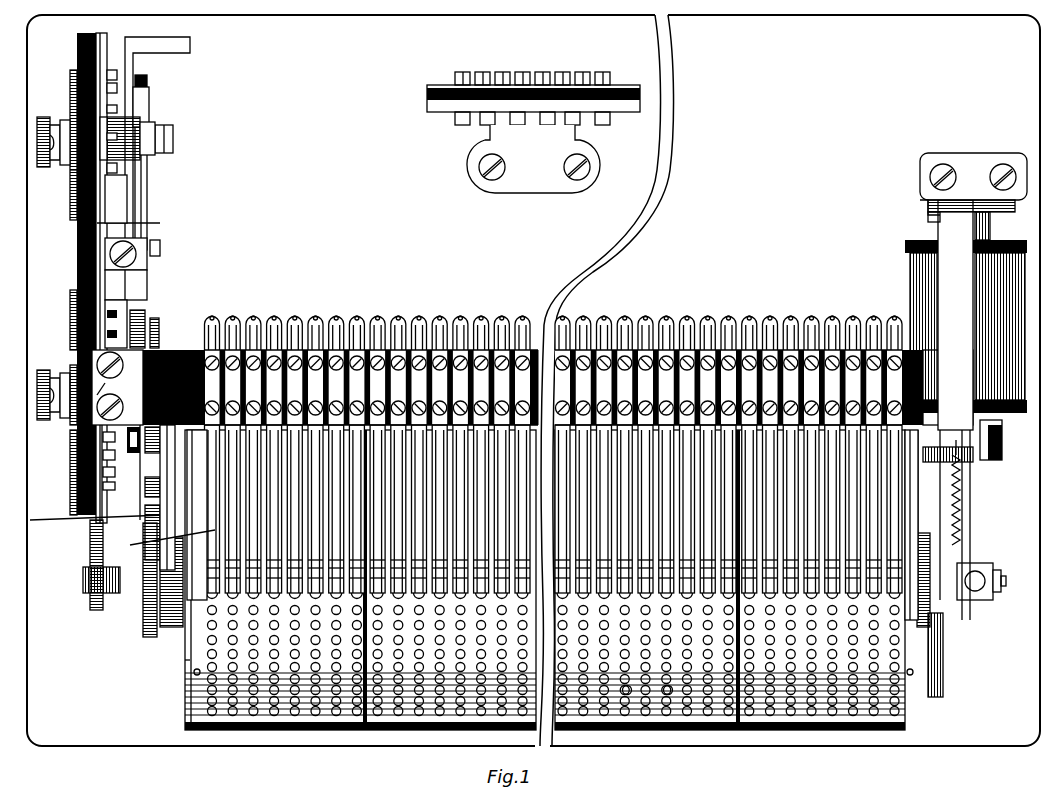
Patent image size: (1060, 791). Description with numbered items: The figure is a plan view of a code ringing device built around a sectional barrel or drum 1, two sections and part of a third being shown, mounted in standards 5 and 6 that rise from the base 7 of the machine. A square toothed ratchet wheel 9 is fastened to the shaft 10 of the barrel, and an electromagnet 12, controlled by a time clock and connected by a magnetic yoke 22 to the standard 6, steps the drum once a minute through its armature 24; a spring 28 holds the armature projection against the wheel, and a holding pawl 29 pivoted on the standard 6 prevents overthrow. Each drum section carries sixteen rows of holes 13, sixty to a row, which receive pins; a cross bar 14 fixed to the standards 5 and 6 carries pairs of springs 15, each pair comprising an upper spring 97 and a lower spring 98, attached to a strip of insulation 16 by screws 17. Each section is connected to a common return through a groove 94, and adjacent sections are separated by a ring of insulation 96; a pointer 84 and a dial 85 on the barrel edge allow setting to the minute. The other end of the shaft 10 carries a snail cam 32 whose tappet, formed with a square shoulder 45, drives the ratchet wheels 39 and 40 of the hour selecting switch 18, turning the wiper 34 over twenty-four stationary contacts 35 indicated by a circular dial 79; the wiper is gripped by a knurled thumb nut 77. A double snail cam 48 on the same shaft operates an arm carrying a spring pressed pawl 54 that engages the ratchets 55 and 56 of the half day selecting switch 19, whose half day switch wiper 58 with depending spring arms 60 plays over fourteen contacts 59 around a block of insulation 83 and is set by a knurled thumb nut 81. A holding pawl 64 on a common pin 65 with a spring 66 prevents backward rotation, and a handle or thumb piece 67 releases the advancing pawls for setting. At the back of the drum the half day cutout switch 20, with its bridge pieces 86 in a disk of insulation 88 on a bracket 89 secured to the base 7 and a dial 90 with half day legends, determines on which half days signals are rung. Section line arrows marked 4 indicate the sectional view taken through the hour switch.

The barrel or drum 1 is at (190, 690).
The section line 4 is at (181, 310).
The standard 5 is at (90, 605).
The standard 6 is at (952, 205).
The base 7 is at (533, 380).
The square toothed ratchet wheel 9 is at (765, 294).
The shaft 10 is at (932, 627).
The electromagnet 12 is at (915, 272).
The holes 13 is at (690, 682).
The cross bar 14 is at (937, 368).
The pairs of springs 15 is at (392, 320).
The strip of insulation 16 is at (143, 387).
The screws 17 is at (440, 322).
The hour selecting switch 18 is at (73, 278).
The half day selecting switch 19 is at (77, 46).
The half day cutout switch 20 is at (490, 113).
The magnetic yoke 22 is at (928, 212).
The armature 24 is at (988, 435).
The spring 28 is at (960, 508).
The holding pawl 29 is at (975, 568).
The snail cam 32 is at (143, 630).
The wiper 34 is at (70, 335).
The stationary contacts 35 is at (72, 490).
The ratchet wheel 39 is at (150, 455).
The ratchet wheel 40 is at (159, 335).
The square shoulder 45 is at (82, 515).
The double snail cam 48 is at (130, 322).
The spring pressed pawl 54 is at (148, 82).
The ratchet 55 is at (145, 120).
The ratchet 56 is at (174, 128).
The half day switch wiper 58 is at (70, 170).
The contacts 59 is at (77, 240).
The depending spring arms 60 is at (72, 112).
The holding pawl 64 is at (150, 135).
The common pin 65 is at (160, 245).
The spring 66 is at (138, 188).
The handle or thumb piece 67 is at (190, 45).
The knurled thumb nut 77 is at (37, 388).
The circular dial 79 is at (102, 303).
The knurled thumb nut 81 is at (42, 167).
The block of insulation 83 is at (160, 223).
The pointer 84 is at (165, 525).
The dial 85 is at (186, 715).
The bridge pieces 86 is at (566, 72).
The disk of insulation 88 is at (427, 93).
The bracket 89 is at (490, 133).
The dial 90 is at (438, 85).
The groove 94 is at (363, 735).
The ring of insulation 96 is at (545, 680).
The upper spring 97 is at (130, 545).
The lower spring 98 is at (215, 590).